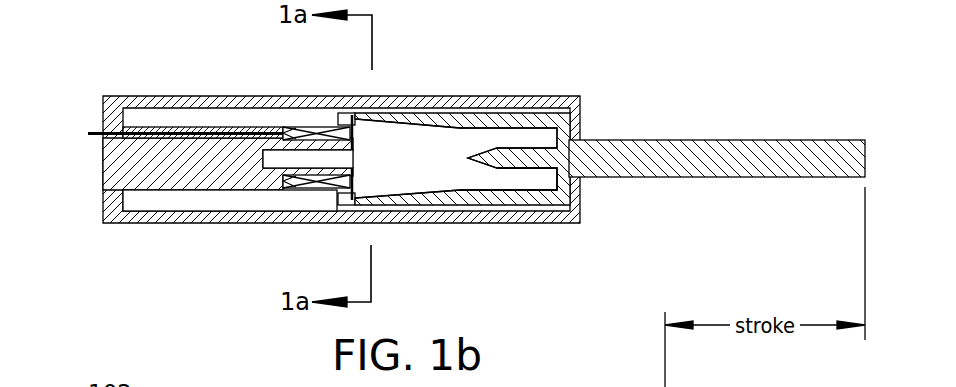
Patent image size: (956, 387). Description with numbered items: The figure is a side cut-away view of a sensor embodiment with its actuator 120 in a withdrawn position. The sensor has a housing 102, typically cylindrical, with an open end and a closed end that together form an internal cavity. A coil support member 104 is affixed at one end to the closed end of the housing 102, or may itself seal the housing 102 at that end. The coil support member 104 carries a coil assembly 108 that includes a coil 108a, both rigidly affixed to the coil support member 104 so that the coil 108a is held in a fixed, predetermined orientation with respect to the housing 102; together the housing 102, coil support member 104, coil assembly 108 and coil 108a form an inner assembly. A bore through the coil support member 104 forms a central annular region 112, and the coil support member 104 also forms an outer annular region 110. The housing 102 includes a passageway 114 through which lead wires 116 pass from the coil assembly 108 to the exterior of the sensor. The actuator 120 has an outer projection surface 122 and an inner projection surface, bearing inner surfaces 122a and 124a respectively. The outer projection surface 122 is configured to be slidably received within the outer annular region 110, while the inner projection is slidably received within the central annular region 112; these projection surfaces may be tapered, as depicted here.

The housing 102 is at (144, 103).
The coil support member 104 is at (116, 172).
The coil assembly 108 is at (304, 126).
The coil 108a is at (362, 134).
The outer annular region 110 is at (183, 200).
The central annular region 112 is at (276, 158).
The passageway 114 is at (200, 127).
The lead wires 116 is at (64, 136).
The actuator 120 is at (703, 140).
The outer projection surface 122 is at (521, 122).
The inner surface 122a is at (460, 129).
The inner surface 124a is at (518, 172).